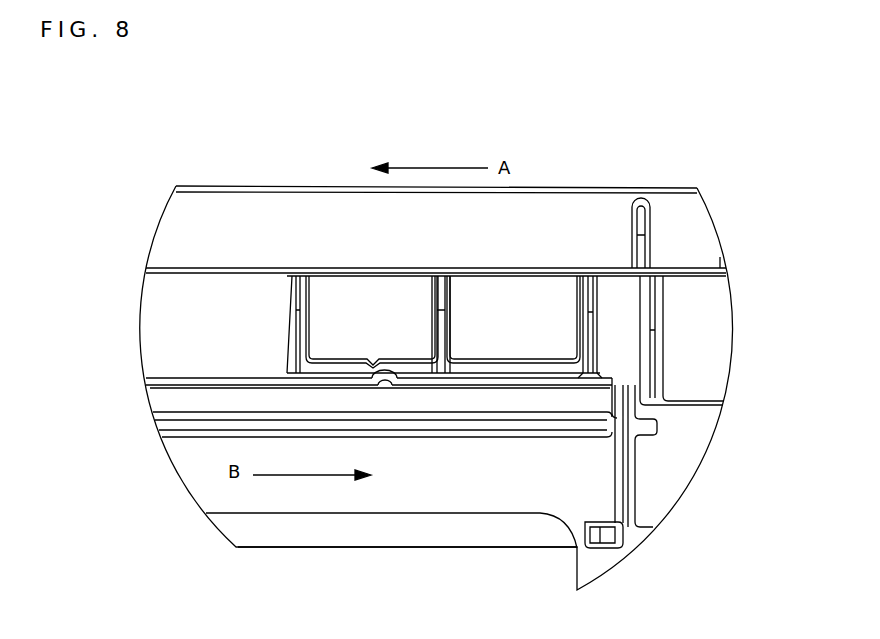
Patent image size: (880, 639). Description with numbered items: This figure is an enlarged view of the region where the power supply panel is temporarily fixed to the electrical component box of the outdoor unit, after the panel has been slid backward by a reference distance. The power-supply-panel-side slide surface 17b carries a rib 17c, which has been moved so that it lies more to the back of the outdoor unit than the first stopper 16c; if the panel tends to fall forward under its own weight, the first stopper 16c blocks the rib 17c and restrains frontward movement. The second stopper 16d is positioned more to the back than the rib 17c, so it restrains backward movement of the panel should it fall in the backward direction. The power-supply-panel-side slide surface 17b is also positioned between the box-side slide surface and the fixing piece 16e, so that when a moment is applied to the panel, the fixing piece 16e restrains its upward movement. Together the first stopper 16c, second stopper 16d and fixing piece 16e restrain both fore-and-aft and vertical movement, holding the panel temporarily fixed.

The first stopper 16c is at (368, 372).
The fixing piece 16e is at (443, 366).
The second stopper 16d is at (650, 358).
The power-supply-panel-side slide surface 17b is at (162, 381).
The rib 17c is at (388, 392).